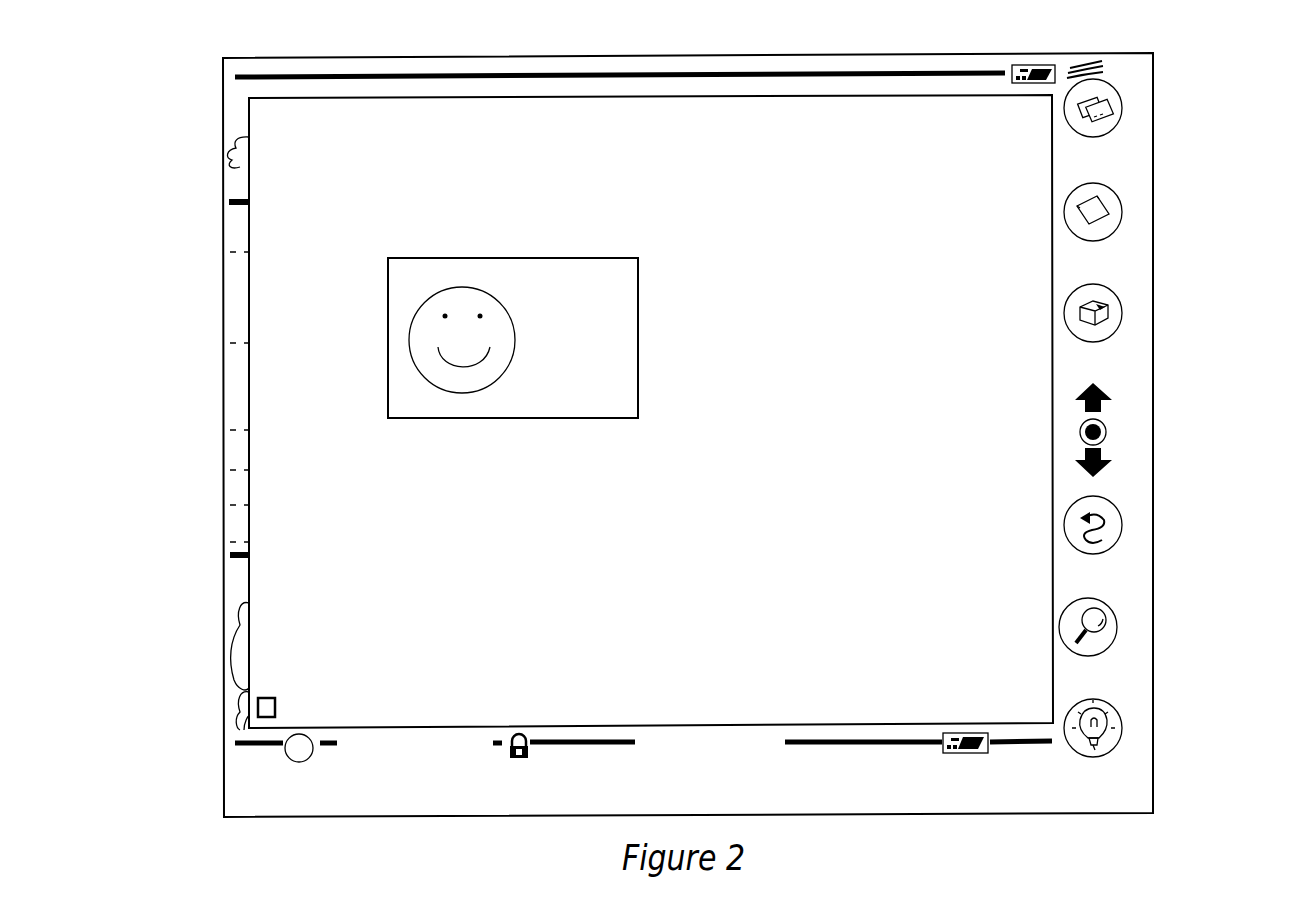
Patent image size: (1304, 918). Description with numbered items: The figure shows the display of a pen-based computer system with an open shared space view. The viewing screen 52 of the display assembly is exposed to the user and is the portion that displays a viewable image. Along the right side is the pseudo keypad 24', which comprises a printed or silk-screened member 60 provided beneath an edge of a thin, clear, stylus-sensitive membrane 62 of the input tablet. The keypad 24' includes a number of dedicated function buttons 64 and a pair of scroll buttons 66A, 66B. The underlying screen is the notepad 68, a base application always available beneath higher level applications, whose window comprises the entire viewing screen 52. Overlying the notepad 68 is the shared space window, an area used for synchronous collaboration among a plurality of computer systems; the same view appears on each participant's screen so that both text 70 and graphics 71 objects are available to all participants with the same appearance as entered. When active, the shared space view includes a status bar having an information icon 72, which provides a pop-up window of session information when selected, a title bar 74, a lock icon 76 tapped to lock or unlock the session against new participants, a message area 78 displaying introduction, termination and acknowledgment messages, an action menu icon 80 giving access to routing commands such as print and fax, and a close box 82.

The pseudo keypad 24' is at (1036, 850).
The viewing screen 52 is at (200, 795).
The printed or silk-screened member 60 is at (1142, 73).
The stylus-sensitive membrane 62 is at (1078, 70).
The dedicated function buttons 64 is at (1123, 110).
The scroll button 66A is at (1107, 395).
The scroll button 66B is at (1107, 467).
The notepad 68 is at (230, 230).
The text 70 is at (515, 172).
The graphics 71 is at (455, 432).
The information icon 72 is at (300, 763).
The title bar 74 is at (403, 763).
The lock icon 76 is at (518, 763).
The message area 78 is at (675, 760).
The action menu icon 80 is at (975, 755).
The close box 82 is at (275, 699).